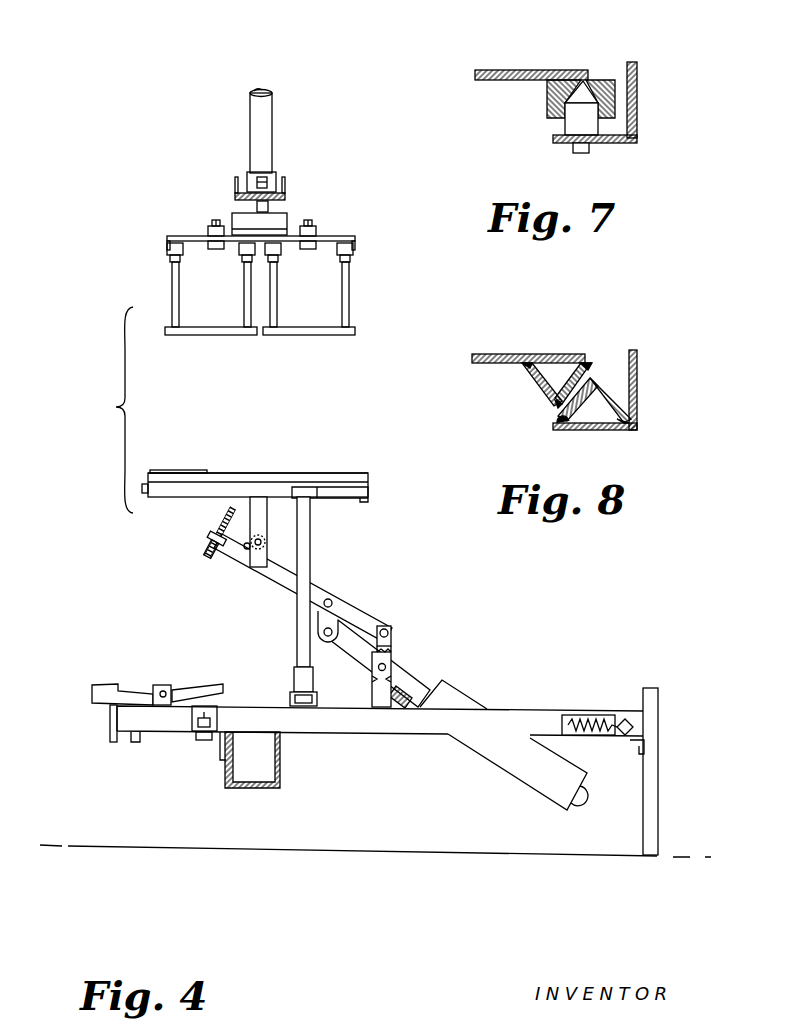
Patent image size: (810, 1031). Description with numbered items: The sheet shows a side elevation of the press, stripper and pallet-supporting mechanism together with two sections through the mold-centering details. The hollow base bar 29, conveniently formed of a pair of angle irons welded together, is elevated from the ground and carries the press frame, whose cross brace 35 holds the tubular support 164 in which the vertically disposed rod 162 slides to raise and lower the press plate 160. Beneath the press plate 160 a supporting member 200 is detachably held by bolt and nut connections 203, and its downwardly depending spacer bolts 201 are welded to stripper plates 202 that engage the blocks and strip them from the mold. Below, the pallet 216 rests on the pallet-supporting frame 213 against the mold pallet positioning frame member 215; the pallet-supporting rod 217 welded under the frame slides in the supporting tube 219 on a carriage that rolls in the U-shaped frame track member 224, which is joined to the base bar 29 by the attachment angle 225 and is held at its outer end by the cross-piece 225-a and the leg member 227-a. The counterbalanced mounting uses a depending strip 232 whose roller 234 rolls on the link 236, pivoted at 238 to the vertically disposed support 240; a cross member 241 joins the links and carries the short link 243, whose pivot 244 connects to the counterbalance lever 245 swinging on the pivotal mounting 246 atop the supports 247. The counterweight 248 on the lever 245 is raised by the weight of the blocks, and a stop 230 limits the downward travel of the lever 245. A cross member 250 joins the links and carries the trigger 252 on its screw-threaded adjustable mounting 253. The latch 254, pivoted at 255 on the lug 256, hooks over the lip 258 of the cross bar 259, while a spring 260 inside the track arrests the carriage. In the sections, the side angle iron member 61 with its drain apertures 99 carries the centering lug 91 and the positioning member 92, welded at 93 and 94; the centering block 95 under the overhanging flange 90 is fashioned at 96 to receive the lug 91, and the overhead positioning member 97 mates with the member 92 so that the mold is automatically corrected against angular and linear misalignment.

In FIG. 4, the vertically disposed rod 162 is at (268, 121).
In FIG. 4, the tubular support 164 is at (273, 178).
In FIG. 4, the cross brace 35 is at (284, 191).
In FIG. 4, the press plate 160 is at (289, 218).
In FIG. 4, the supporting member 200 is at (341, 237).
In FIG. 4, the bolt and nut connections 203 is at (315, 229).
In FIG. 4, the spacer bolts 201 is at (349, 293).
In FIG. 4, the stripper plates 202 is at (325, 335).
In FIG. 4, the mold pallet positioning frame member 215 is at (190, 470).
In FIG. 4, the pallet 216 is at (306, 480).
In FIG. 4, the pallet-supporting frame 213 is at (338, 497).
In FIG. 4, the strip 232 is at (249, 504).
In FIG. 4, the pallet-supporting rod 217 is at (312, 560).
In FIG. 4, the supporting tube 219 is at (300, 677).
In FIG. 4, the trigger 252 is at (211, 534).
In FIG. 4, the screw-threaded adjustable mounting 253 is at (213, 551).
In FIG. 4, the cross member 250 is at (208, 561).
In FIG. 4, the roller 234 is at (246, 550).
In FIG. 4, the link 236 is at (288, 583).
In FIG. 4, the cross member 241 is at (332, 601).
In FIG. 4, the short link 243 is at (337, 619).
In FIG. 4, the pivot 244 is at (338, 624).
In FIG. 4, the pivot 238 is at (390, 634).
In FIG. 4, the vertically disposed support 240 is at (394, 647).
In FIG. 4, the pivotal mounting 246 is at (378, 668).
In FIG. 4, the vertically disposed supports 247 is at (376, 680).
In FIG. 4, the counterbalance lever 245 is at (422, 690).
In FIG. 4, the stop 230 is at (442, 685).
In FIG. 4, the latch 254 is at (141, 693).
In FIG. 4, the pivot 255 is at (167, 691).
In FIG. 4, the lug 256 is at (171, 705).
In FIG. 4, the lip 258 is at (112, 708).
In FIG. 4, the cross bar 259 is at (134, 743).
In FIG. 4, the attachment angle 225 is at (222, 758).
In FIG. 4, the hollow base bar 29 is at (281, 777).
In FIG. 4, the frame track member 224 is at (443, 734).
In FIG. 4, the counterweight 248 is at (575, 801).
In FIG. 4, the spring 260 is at (590, 715).
In FIG. 4, the cross-piece 225-a is at (647, 751).
In FIG. 4, the leg member 227-a is at (660, 787).
In FIG. 7, the overhanging flange 90 is at (572, 69).
In FIG. 8, the overhanging flange 90 is at (558, 354).
In FIG. 7, the centering block cooperating portion 96 is at (597, 81).
In FIG. 7, the side angle iron member 61 is at (638, 95).
In FIG. 8, the side angle iron member 61 is at (638, 373).
In FIG. 7, the centering block 95 is at (548, 101).
In FIG. 7, the centering lug 91 is at (568, 127).
In FIG. 7, the weld 93 is at (574, 148).
In FIG. 7, the apertures 99 is at (634, 138).
In FIG. 8, the apertures 99 is at (638, 421).
In FIG. 8, the overhead positioning member 97 is at (603, 380).
In FIG. 8, the positioning member 92 is at (565, 423).
In FIG. 8, the weld 94 is at (622, 433).